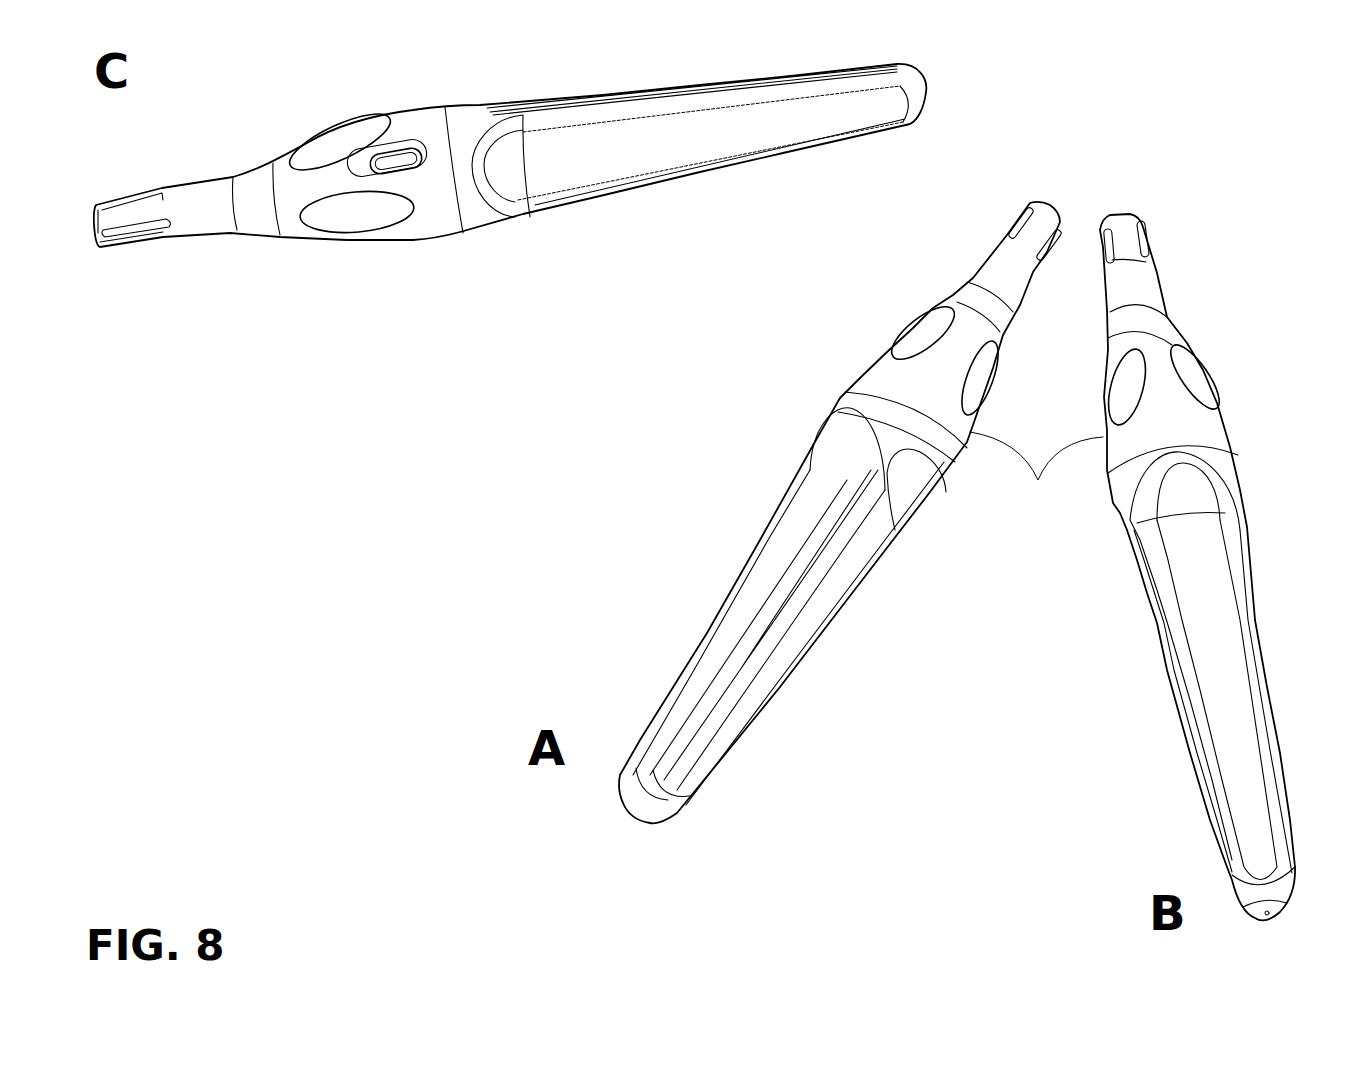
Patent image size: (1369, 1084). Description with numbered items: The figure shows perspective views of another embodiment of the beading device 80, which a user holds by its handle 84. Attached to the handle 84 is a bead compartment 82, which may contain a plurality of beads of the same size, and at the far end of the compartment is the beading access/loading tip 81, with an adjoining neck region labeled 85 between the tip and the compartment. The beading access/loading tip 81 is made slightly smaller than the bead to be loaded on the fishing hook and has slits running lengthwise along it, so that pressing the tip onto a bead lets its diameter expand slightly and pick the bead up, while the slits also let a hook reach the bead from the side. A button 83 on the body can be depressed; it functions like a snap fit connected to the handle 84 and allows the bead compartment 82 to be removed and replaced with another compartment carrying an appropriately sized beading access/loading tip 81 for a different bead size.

The device 80 is at (702, 480).
The beading access/loading tip 81 is at (95, 243).
The bead compartment 82 is at (417, 123).
The button 83 is at (392, 173).
The handle 84 is at (663, 107).
The neck 85 is at (180, 197).